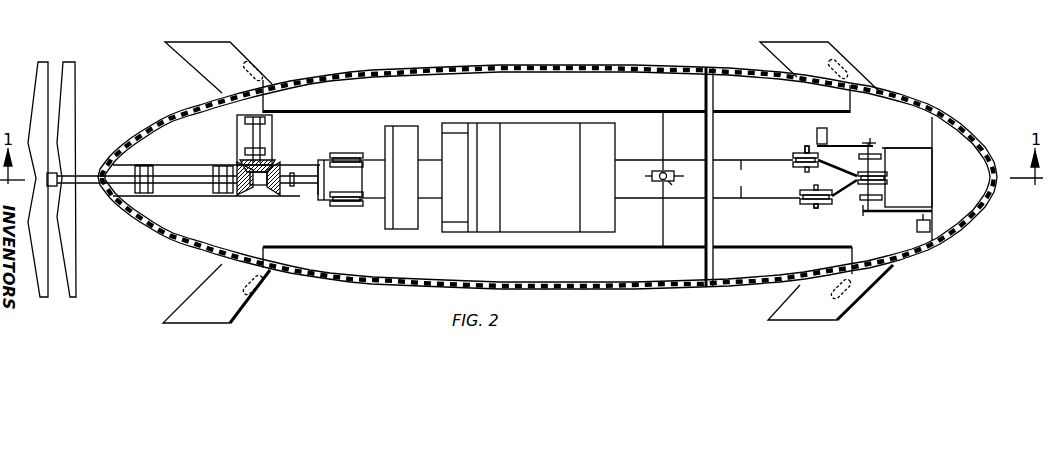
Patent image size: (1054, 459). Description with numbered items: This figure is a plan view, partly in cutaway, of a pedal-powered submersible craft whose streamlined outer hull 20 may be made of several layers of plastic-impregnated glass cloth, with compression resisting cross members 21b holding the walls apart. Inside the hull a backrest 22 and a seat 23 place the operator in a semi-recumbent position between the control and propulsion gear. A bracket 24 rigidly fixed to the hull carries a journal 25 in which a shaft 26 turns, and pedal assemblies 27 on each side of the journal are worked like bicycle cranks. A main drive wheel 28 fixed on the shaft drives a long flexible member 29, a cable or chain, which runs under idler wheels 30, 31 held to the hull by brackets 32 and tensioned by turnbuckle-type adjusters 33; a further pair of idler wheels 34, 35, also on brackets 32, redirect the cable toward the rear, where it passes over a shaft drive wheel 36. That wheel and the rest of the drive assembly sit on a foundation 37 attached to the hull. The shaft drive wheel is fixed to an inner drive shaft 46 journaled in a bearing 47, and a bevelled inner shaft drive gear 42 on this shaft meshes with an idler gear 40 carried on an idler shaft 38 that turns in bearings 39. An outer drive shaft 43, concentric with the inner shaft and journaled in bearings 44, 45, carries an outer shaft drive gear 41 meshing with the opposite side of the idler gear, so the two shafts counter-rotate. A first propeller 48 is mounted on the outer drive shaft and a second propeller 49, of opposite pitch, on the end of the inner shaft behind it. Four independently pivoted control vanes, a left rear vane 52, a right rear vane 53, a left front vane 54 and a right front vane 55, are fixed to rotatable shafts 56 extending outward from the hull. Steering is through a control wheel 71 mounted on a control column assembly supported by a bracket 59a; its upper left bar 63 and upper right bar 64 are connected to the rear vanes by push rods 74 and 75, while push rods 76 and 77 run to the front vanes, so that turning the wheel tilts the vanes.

The outer hull 20 is at (537, 66).
The compression resisting cross members 21b is at (704, 93).
The backrest 22 is at (413, 170).
The seat 23 is at (545, 170).
The bracket 24 is at (920, 188).
The journal 25 is at (886, 151).
The shaft 26 is at (875, 154).
The pedal assemblies 27 is at (829, 147).
The main drive wheel 28 is at (888, 176).
The long flexible member 29 is at (756, 179).
The idler wheel 30 is at (795, 156).
The idler wheel 31 is at (806, 205).
The brackets 32 is at (338, 153).
The turnbuckle-type adjusters 33 is at (866, 214).
The idler wheel 34 is at (327, 160).
The idler wheel 35 is at (352, 196).
The shaft drive wheel 36 is at (318, 197).
The foundation 37 is at (190, 165).
The idler shaft 38 is at (250, 133).
The bearings 39 is at (266, 120).
The idler gear 40 is at (272, 161).
The outer shaft drive gear 41 is at (246, 192).
The inner shaft drive gear 42 is at (297, 176).
The outer drive shaft 43 is at (197, 184).
The bearing 44 is at (230, 194).
The bearing 45 is at (146, 165).
The inner drive shaft 46 is at (308, 184).
The bearing 47 is at (279, 195).
The first propeller 48 is at (76, 67).
The second propeller 49 is at (46, 67).
The left rear vane 52 is at (222, 70).
The right rear vane 53 is at (229, 308).
The left front vane 54 is at (818, 65).
The right front vane 55 is at (828, 311).
The rotatable shafts 56 is at (267, 98).
The bracket 59a is at (673, 184).
The upper left bar 63 is at (660, 137).
The upper right bar 64 is at (660, 215).
The control wheel 71 is at (652, 175).
The push rod 74 is at (440, 112).
The push rod 75 is at (463, 250).
The push rod 76 is at (770, 111).
The push rod 77 is at (744, 251).